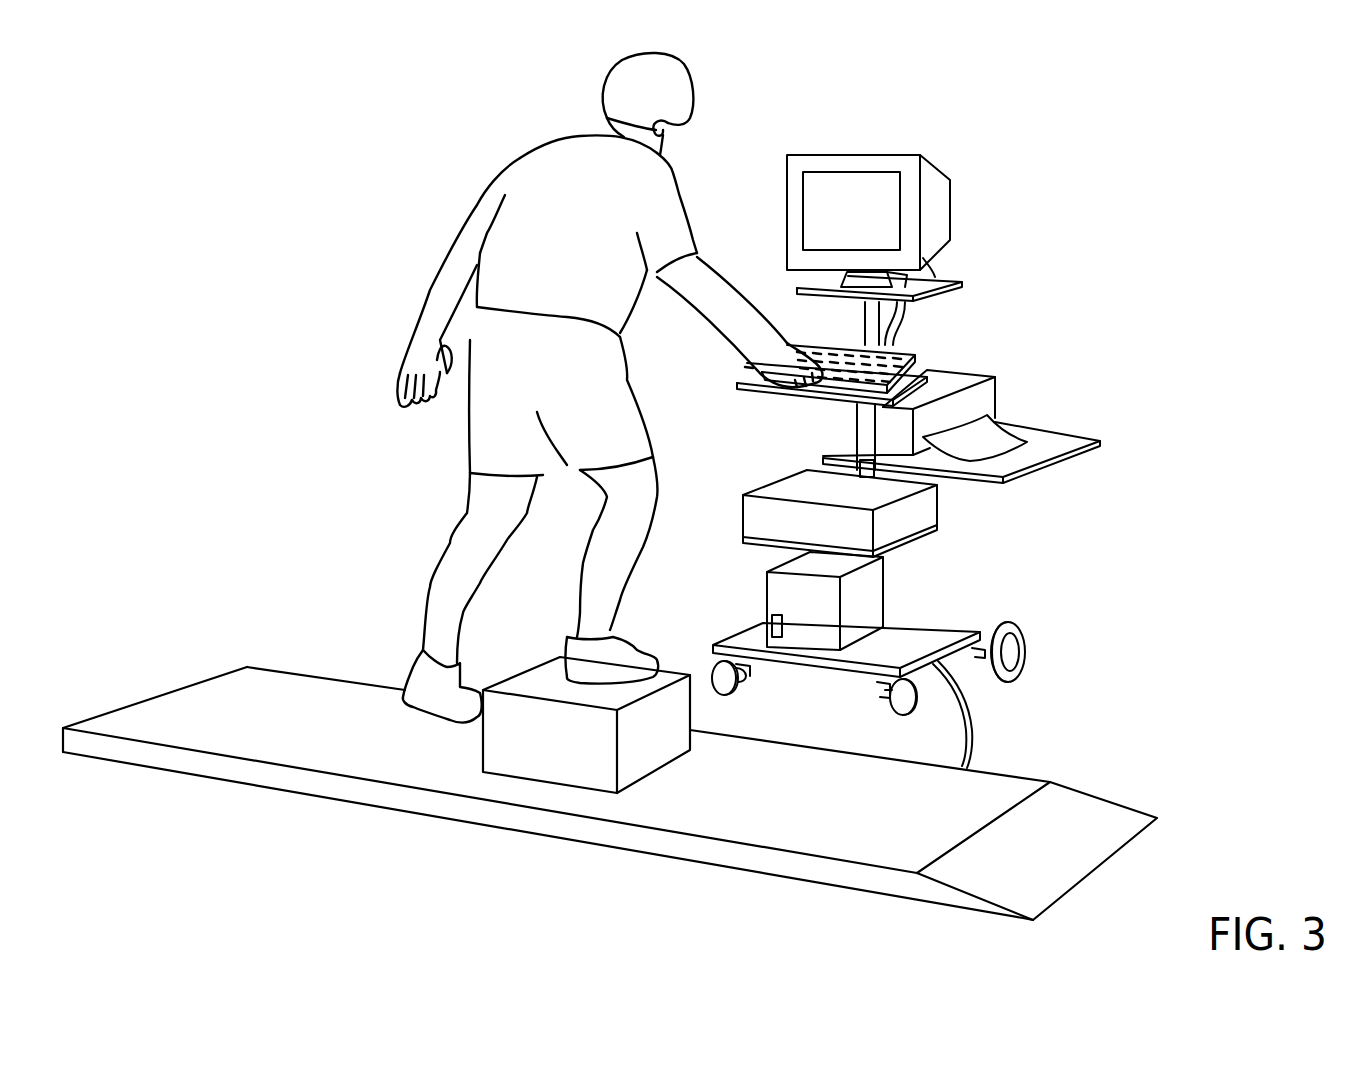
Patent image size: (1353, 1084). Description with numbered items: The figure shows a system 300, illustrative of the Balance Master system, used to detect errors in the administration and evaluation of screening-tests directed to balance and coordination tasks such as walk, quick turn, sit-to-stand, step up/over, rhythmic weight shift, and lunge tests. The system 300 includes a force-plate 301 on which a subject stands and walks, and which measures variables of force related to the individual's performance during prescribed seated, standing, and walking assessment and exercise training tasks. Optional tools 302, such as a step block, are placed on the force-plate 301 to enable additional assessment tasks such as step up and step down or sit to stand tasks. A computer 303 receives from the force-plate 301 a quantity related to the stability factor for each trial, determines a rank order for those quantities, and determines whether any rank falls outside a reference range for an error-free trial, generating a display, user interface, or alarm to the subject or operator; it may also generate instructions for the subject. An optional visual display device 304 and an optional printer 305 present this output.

The system 300 is at (1284, 152).
The force-plate 301 is at (357, 785).
The tools 302 is at (565, 772).
The computer 303 is at (930, 513).
The visual display device 304 is at (945, 201).
The printer 305 is at (990, 388).